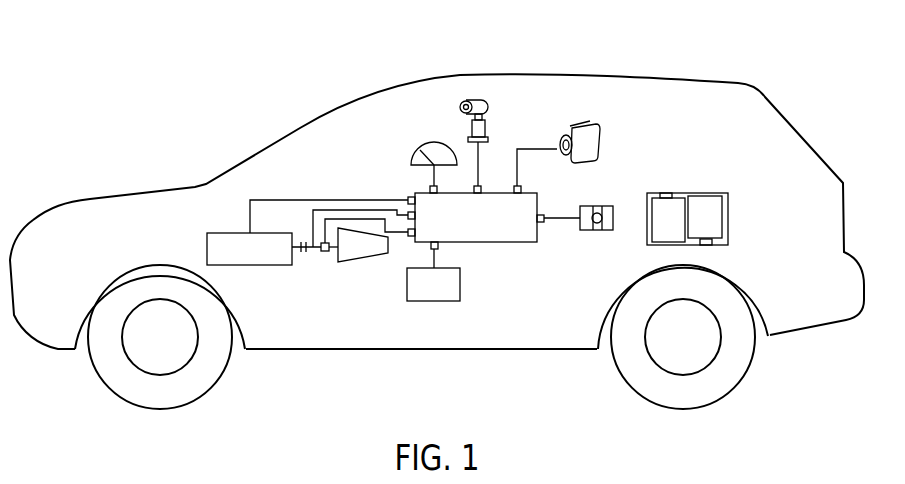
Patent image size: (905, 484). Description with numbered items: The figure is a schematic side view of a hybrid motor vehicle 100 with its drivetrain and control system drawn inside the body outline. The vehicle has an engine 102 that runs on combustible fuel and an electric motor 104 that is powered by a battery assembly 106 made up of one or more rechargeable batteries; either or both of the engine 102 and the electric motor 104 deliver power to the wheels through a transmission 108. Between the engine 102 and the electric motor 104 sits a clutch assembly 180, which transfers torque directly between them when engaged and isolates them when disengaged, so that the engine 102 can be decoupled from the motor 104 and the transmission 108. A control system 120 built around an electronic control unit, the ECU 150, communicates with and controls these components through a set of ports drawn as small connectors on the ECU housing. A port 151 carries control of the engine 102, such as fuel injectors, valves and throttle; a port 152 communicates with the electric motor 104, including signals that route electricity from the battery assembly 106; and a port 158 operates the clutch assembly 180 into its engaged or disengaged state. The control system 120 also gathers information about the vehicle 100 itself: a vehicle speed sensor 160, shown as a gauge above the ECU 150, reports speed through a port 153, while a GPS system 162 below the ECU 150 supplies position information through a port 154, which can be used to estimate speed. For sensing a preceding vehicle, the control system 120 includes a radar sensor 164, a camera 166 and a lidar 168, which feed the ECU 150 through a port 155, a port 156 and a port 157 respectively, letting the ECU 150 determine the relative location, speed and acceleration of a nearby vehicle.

The motor vehicle 100 is at (710, 82).
The engine 102 is at (272, 267).
The electric motor 104 is at (325, 252).
The battery assembly 106 is at (697, 188).
The transmission 108 is at (342, 264).
The control system 120 is at (557, 228).
The electronic control unit (ECU) 150 is at (521, 237).
The port 151 is at (407, 214).
The port 152 is at (407, 237).
The port 153 is at (414, 192).
The port 154 is at (438, 247).
The port 155 is at (486, 186).
The port 156 is at (521, 188).
The port 157 is at (545, 224).
The port 158 is at (407, 201).
The vehicle speed sensor 160 is at (436, 141).
The GPS system 162 is at (448, 302).
The radar sensor 164 is at (472, 100).
The camera 166 is at (590, 127).
The lidar 168 is at (609, 208).
The clutch assembly 180 is at (303, 236).